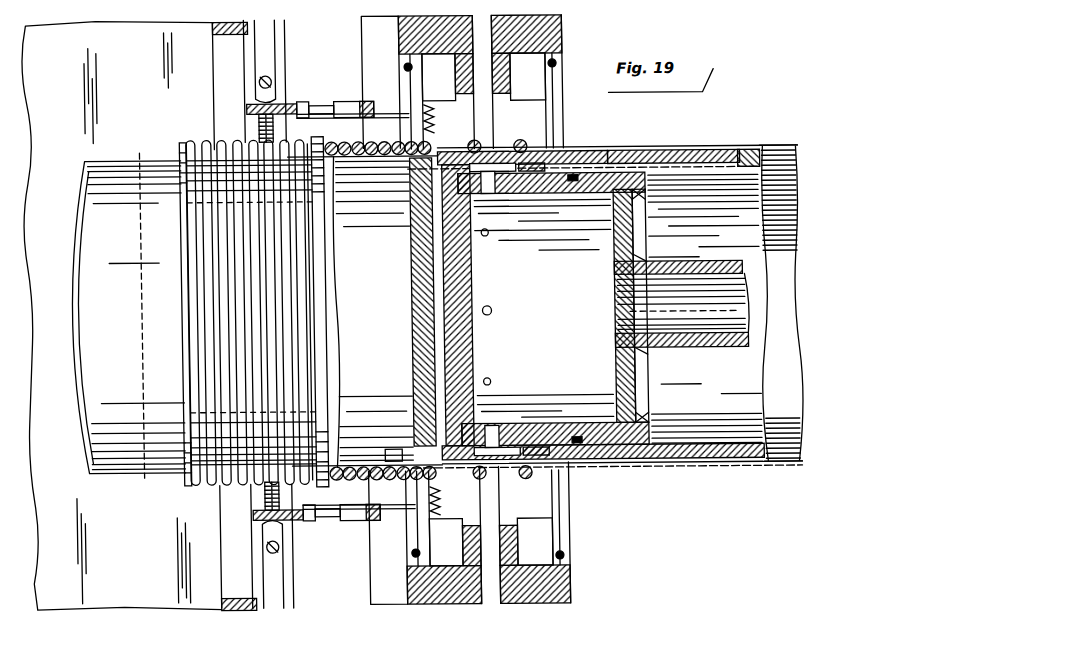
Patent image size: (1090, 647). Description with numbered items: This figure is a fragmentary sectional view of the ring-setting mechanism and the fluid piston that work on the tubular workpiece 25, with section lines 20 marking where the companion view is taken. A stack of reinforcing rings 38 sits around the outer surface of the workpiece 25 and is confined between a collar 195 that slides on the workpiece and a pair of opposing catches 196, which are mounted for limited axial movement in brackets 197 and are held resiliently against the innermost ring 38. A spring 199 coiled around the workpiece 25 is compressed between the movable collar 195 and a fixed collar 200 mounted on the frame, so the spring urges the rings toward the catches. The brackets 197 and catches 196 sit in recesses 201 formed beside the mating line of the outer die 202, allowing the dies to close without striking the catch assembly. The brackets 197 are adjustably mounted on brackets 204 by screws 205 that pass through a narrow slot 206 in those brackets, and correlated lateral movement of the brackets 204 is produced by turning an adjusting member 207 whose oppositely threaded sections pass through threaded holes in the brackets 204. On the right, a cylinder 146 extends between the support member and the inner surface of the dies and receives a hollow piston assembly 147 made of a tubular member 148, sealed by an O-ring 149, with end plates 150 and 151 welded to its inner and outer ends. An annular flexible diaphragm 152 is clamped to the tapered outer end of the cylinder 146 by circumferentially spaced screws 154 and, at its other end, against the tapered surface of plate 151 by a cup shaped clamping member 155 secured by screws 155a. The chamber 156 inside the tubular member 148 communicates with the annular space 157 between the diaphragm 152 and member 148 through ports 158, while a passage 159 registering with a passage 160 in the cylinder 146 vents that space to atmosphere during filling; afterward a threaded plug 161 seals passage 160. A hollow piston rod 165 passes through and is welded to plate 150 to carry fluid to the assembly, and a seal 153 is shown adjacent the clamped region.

The section line 20 is at (310, 43).
The workpiece 25 is at (611, 151).
The reinforcing ring 38 is at (393, 448).
The cylinder 146 is at (707, 435).
The hollow piston assembly 147 is at (648, 250).
The tubular member 148 is at (545, 425).
The O-ring 149 is at (592, 446).
The end plate 150 is at (640, 385).
The end plate 151 is at (478, 358).
The annular flexible diaphragm 152 is at (495, 195).
The seal ring 153 is at (530, 172).
The screws 154 is at (538, 423).
The cup shaped circular clamping member 155 is at (412, 269).
The screws 155a is at (372, 311).
The chamber 156 is at (583, 335).
The annular space 157 is at (492, 172).
The ports 158 is at (490, 232).
The passage 159 is at (556, 151).
The passage 160 is at (673, 151).
The plug 161 is at (746, 151).
The hollow piston rod 165 is at (703, 262).
The collar 195 is at (346, 474).
The catches 196 is at (417, 122).
The brackets 197 is at (397, 110).
The spring 199 is at (208, 140).
The fixed collar 200 is at (143, 158).
The recesses 201 is at (403, 52).
The outer die 202 is at (403, 72).
The brackets 204 is at (303, 100).
The screws 205 is at (321, 104).
The slot 206 is at (344, 100).
The adjusting member 207 is at (262, 118).